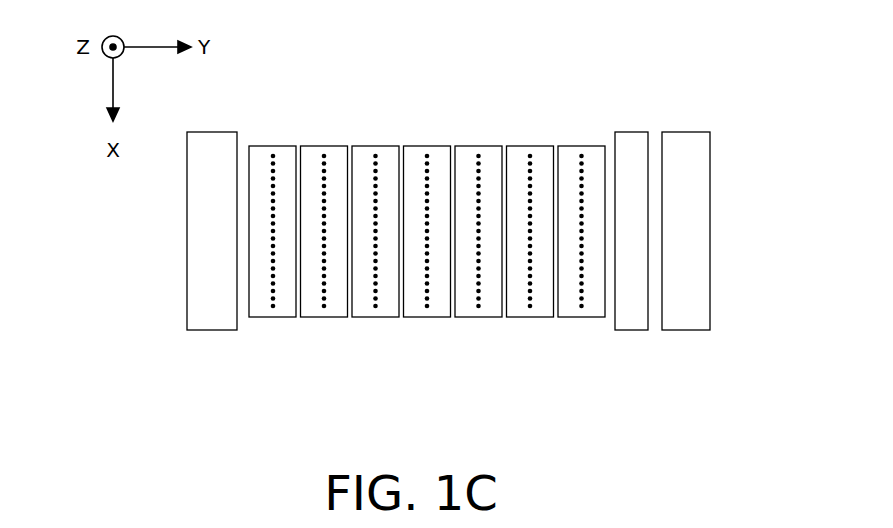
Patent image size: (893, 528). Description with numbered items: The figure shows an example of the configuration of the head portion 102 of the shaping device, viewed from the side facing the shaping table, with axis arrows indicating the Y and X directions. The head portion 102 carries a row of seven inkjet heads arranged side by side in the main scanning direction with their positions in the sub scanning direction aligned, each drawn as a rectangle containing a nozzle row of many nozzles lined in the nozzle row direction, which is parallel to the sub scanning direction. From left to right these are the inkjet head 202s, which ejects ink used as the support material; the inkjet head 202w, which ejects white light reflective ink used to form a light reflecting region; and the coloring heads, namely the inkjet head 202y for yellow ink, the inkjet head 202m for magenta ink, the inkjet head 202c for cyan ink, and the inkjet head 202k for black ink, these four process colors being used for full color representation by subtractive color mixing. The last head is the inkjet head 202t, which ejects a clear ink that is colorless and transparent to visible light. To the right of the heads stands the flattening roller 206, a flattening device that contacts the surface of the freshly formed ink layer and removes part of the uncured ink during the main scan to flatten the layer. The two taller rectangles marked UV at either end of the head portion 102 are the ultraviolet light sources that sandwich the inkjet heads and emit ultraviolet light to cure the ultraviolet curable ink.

The head portion 102 is at (776, 55).
The flattening roller 206 is at (633, 131).
The inkjet head 202s is at (280, 317).
The inkjet head 202w is at (323, 317).
The inkjet head 202y is at (383, 317).
The inkjet head 202m is at (427, 317).
The inkjet head 202c is at (488, 317).
The inkjet head 202k is at (528, 317).
The inkjet head 202t is at (590, 317).